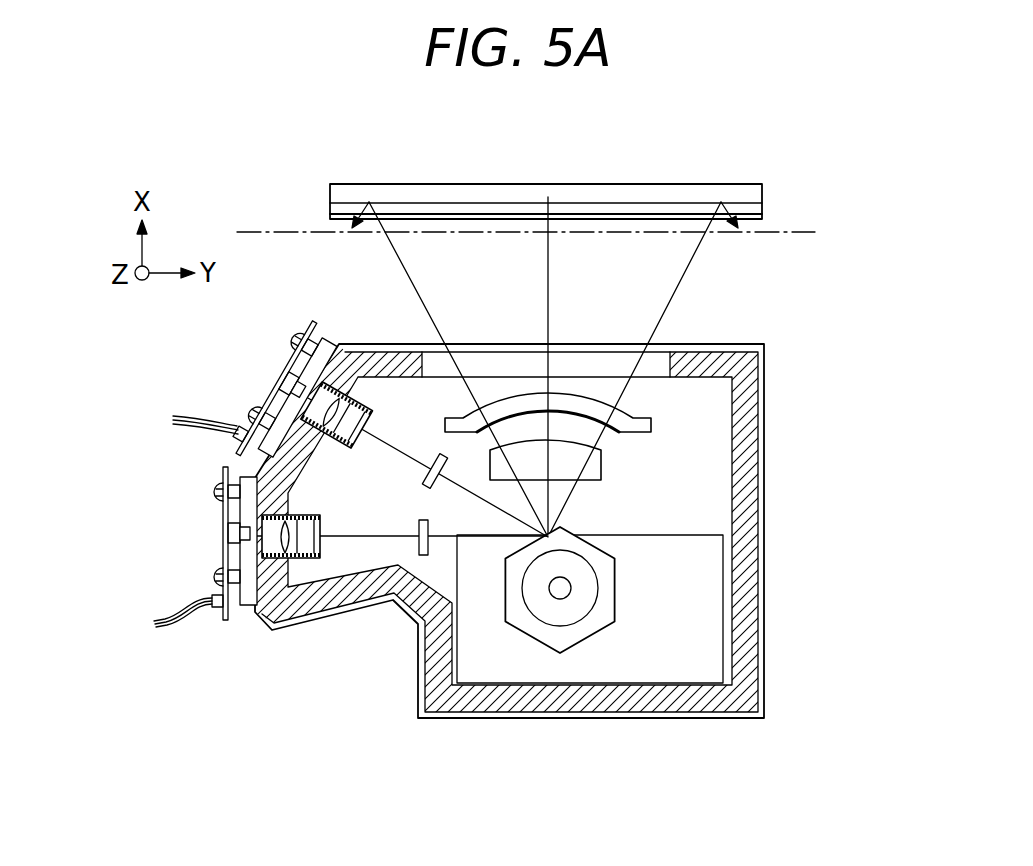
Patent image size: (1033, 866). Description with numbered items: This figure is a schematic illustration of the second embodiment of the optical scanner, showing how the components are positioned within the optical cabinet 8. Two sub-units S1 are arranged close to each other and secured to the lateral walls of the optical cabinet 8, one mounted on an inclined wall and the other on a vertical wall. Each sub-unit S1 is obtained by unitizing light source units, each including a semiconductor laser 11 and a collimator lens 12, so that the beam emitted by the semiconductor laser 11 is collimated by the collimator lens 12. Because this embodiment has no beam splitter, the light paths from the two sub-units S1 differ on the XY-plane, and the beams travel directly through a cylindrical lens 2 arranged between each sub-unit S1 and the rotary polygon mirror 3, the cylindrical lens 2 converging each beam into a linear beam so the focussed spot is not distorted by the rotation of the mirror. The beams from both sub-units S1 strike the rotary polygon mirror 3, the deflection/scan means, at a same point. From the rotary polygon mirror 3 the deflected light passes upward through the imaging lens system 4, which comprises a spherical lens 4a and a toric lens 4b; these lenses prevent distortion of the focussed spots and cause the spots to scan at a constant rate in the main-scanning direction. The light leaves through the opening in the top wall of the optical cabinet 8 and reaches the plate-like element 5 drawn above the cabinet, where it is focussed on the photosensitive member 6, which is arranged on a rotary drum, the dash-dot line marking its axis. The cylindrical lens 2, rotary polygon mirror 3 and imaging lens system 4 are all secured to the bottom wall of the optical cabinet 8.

The cylindrical lens 2 is at (430, 490).
The rotary polygon mirror 3 is at (597, 622).
The imaging lens system 4 is at (653, 446).
The spherical lens 4a is at (601, 475).
The toric lens 4b is at (652, 425).
The plate 5 is at (660, 186).
The photosensitive member 6 is at (265, 232).
The optical cabinet 8 is at (745, 652).
The semiconductor laser 11 is at (243, 546).
The collimator lens 12 is at (282, 532).
The sub-unit S1 is at (310, 475).